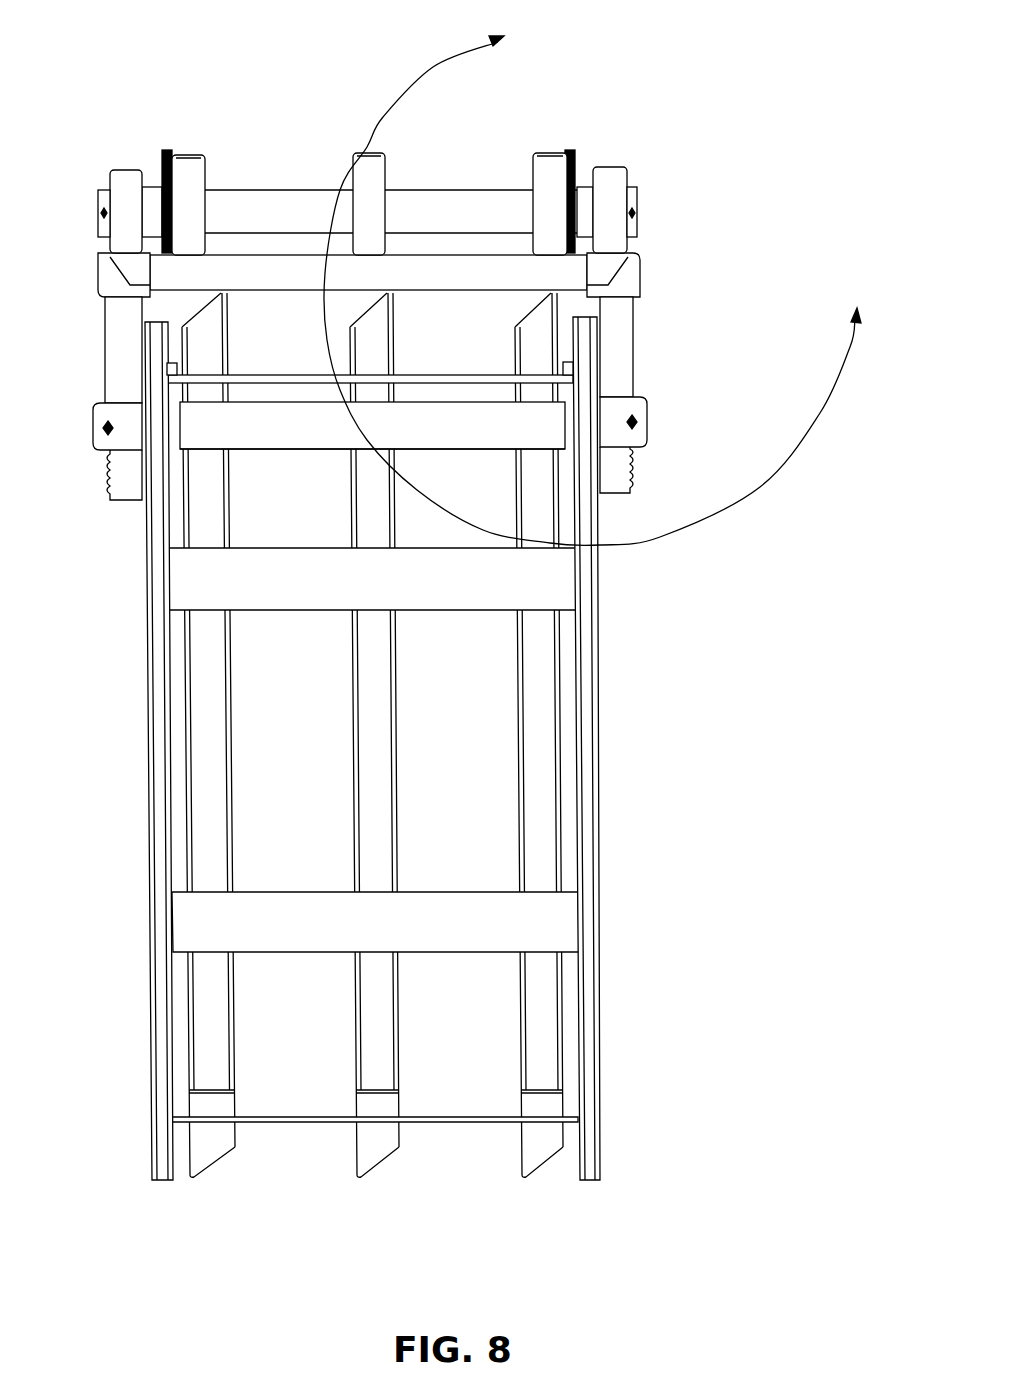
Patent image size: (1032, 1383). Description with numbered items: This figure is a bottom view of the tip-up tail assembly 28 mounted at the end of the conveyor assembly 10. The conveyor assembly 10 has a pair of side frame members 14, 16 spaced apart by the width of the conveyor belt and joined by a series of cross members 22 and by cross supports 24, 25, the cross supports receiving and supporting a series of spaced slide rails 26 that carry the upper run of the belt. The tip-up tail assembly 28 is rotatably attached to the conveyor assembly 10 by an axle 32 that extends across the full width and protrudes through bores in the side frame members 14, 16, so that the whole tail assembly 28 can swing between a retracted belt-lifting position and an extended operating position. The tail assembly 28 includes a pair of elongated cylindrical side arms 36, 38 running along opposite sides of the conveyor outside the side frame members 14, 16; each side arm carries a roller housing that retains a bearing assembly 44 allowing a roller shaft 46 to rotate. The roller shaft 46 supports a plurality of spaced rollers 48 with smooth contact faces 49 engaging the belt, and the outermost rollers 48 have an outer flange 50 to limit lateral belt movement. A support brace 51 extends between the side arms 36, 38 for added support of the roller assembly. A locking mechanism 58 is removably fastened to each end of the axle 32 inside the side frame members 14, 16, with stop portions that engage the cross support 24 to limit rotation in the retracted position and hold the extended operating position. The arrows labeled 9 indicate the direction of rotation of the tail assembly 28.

The direction of rotation 9 is at (611, 288).
The conveyor assembly 10 is at (410, 736).
The side frame member 14 is at (600, 812).
The side frame member 16 is at (152, 812).
The cross member 22 is at (284, 432).
The cross support 24 is at (262, 378).
The cross support 25 is at (447, 1125).
The slide rail 26 is at (220, 796).
The tip-up tail assembly 28 is at (386, 250).
The axle 32 is at (447, 440).
The side arm 36 is at (623, 323).
The side arm 38 is at (110, 372).
The bearing assembly 44 is at (127, 172).
The roller shaft 46 is at (443, 205).
The roller 48 is at (195, 168).
The smooth contact face 49 is at (182, 152).
The outer flange 50 is at (167, 150).
The support brace 51 is at (487, 275).
The locking mechanism 58 is at (592, 388).